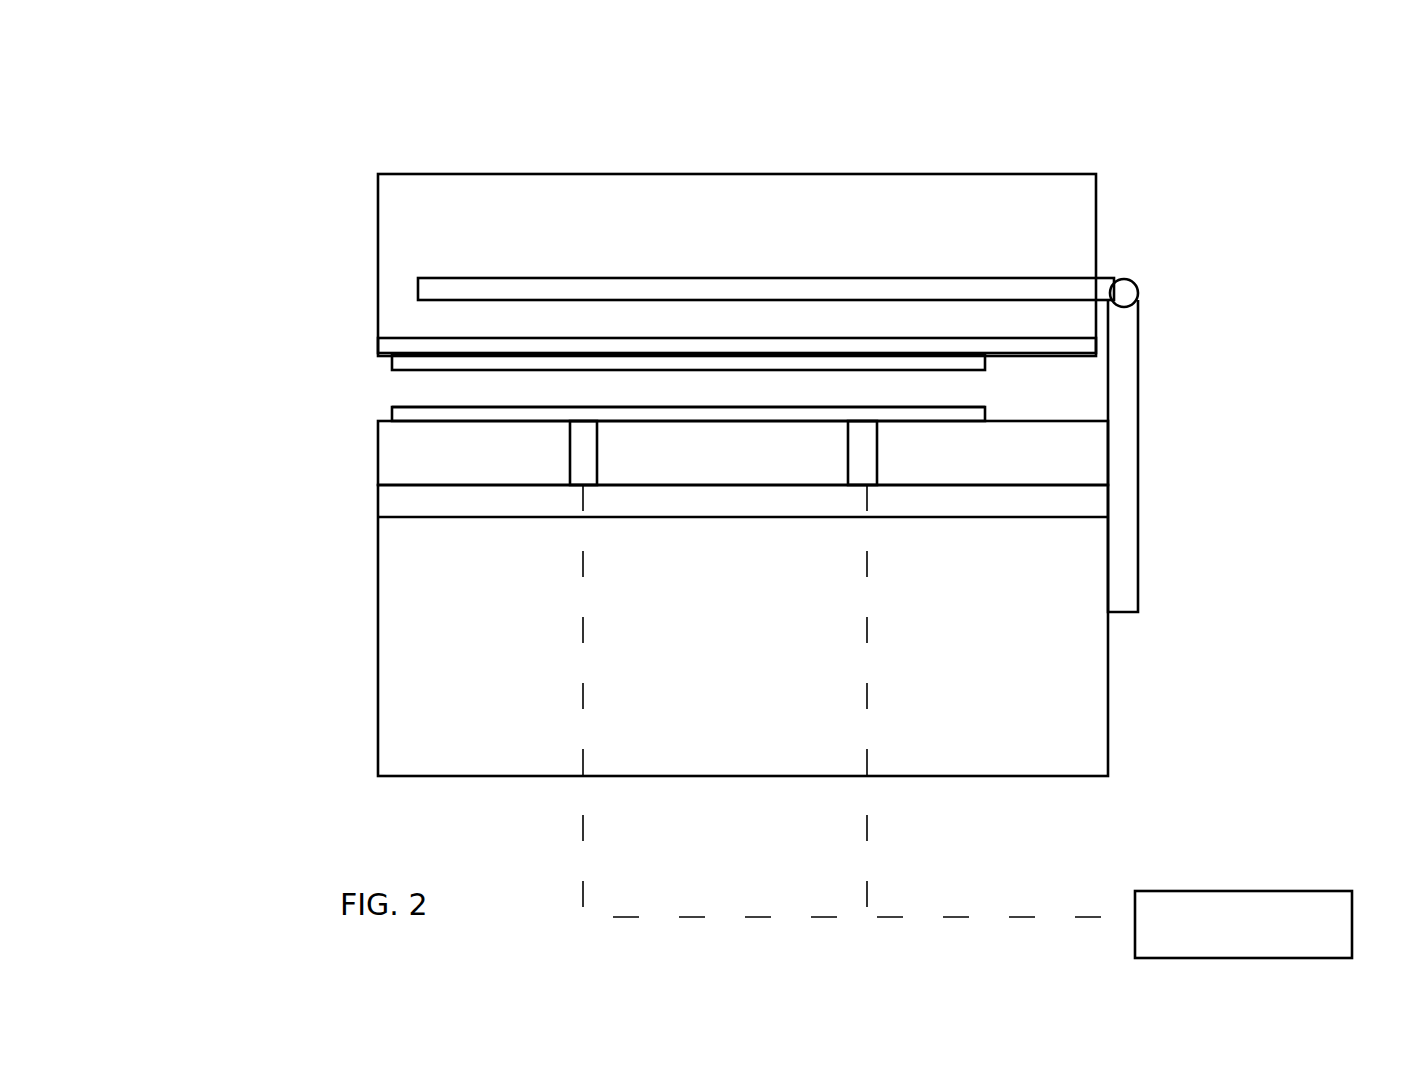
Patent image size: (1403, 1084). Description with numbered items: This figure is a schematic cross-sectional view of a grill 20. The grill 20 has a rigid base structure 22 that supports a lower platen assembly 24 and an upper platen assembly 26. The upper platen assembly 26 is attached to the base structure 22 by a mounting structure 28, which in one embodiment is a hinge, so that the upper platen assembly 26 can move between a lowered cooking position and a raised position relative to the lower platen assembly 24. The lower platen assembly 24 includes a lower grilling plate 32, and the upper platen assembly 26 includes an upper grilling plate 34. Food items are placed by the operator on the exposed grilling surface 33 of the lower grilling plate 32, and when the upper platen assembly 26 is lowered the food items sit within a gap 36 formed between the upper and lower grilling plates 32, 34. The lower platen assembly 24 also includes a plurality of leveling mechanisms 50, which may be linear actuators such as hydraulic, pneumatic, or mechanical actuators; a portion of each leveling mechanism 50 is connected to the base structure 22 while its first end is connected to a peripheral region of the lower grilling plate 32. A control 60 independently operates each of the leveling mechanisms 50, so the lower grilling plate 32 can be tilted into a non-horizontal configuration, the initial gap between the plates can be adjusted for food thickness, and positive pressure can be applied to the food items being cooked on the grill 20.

The grill 20 is at (308, 120).
The base structure 22 is at (1070, 657).
The lower platen assembly 24 is at (377, 460).
The upper platen assembly 26 is at (377, 347).
The mounting structure 28 is at (1128, 425).
The lower grilling plate 32 is at (390, 413).
The grilling surface 33 is at (410, 400).
The upper grilling plate 34 is at (397, 362).
The gap 36 is at (933, 387).
The leveling mechanism 50 is at (587, 450).
The control 60 is at (1322, 884).